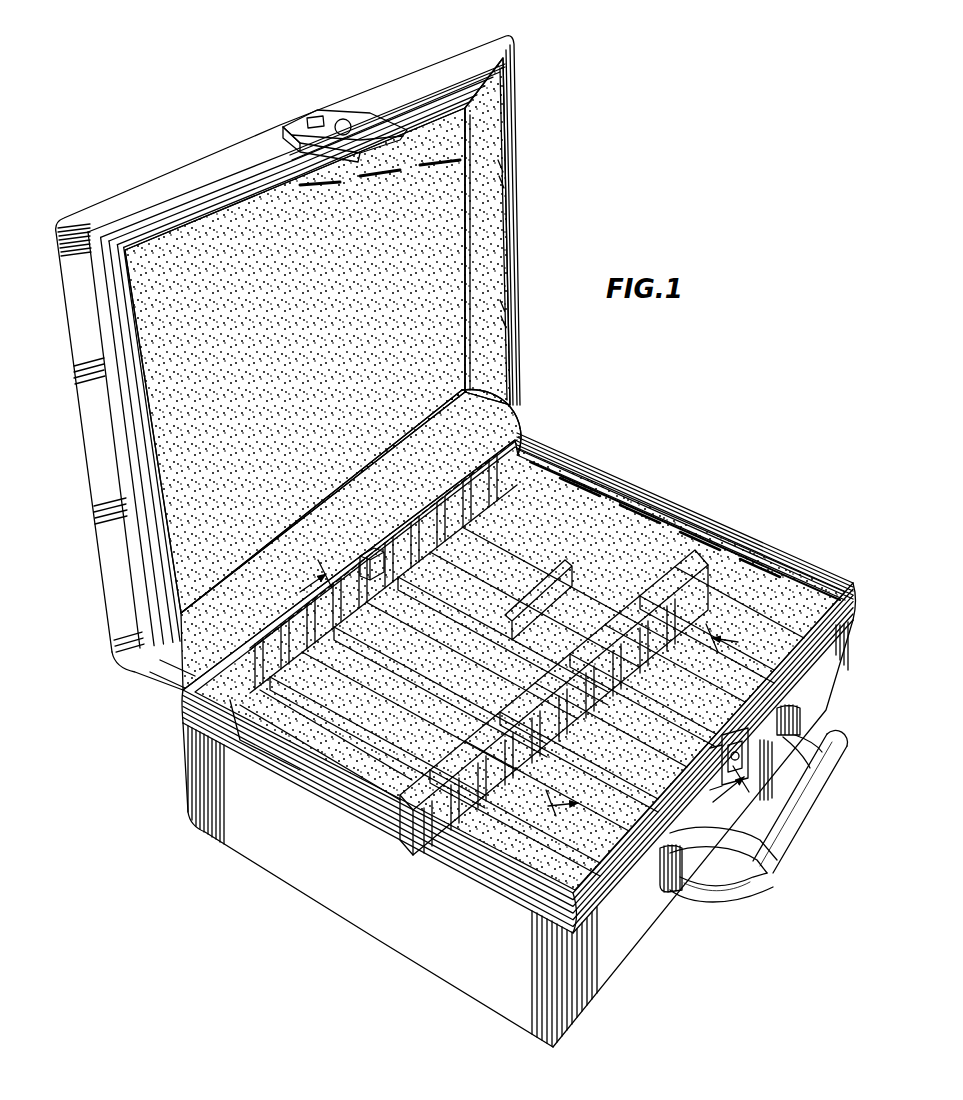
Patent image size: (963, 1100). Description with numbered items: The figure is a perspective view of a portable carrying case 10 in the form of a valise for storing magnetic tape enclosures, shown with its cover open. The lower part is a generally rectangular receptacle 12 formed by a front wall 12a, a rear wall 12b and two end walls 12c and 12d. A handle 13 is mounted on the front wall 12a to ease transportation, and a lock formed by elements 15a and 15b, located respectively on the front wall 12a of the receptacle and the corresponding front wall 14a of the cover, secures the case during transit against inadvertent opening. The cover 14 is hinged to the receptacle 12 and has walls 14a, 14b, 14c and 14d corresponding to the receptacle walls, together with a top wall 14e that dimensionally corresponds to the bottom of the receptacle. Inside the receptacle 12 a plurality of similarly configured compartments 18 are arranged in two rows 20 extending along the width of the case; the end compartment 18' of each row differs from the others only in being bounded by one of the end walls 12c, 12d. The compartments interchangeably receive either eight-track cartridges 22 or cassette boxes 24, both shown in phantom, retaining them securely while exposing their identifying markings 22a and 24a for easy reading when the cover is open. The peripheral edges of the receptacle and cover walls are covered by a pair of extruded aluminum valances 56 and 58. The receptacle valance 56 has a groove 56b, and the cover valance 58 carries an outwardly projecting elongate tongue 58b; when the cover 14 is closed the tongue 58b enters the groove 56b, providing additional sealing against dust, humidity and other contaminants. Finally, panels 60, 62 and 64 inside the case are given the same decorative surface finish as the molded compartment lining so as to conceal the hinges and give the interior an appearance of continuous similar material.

The carrying case 10 is at (236, 886).
The receptacle 12 is at (618, 968).
The front wall 12a is at (580, 1022).
The rear wall 12b is at (190, 762).
The end wall 12c is at (332, 905).
The end wall 12d is at (763, 554).
The handle 13 is at (800, 858).
The cover 14 is at (94, 580).
The cover front wall 14a is at (237, 160).
The cover rear wall 14b is at (150, 670).
The cover end wall 14c is at (100, 465).
The cover end wall 14d is at (490, 330).
The top wall 14e is at (324, 305).
The lock element 15a is at (784, 762).
The lock element 15b is at (337, 110).
The compartment 18 is at (372, 566).
The end compartment 18' is at (498, 636).
The row 20 is at (636, 498).
The 8-track cartridge 22 is at (640, 652).
The marking 22a is at (567, 598).
The cassette box 24 is at (472, 840).
The marking 24a is at (376, 553).
The valance 56 is at (520, 905).
The groove 56b is at (596, 478).
The valance 58 is at (440, 80).
The tongue 58b is at (518, 143).
The panel 60 is at (447, 233).
The panel 62 is at (488, 182).
The panel 64 is at (178, 692).